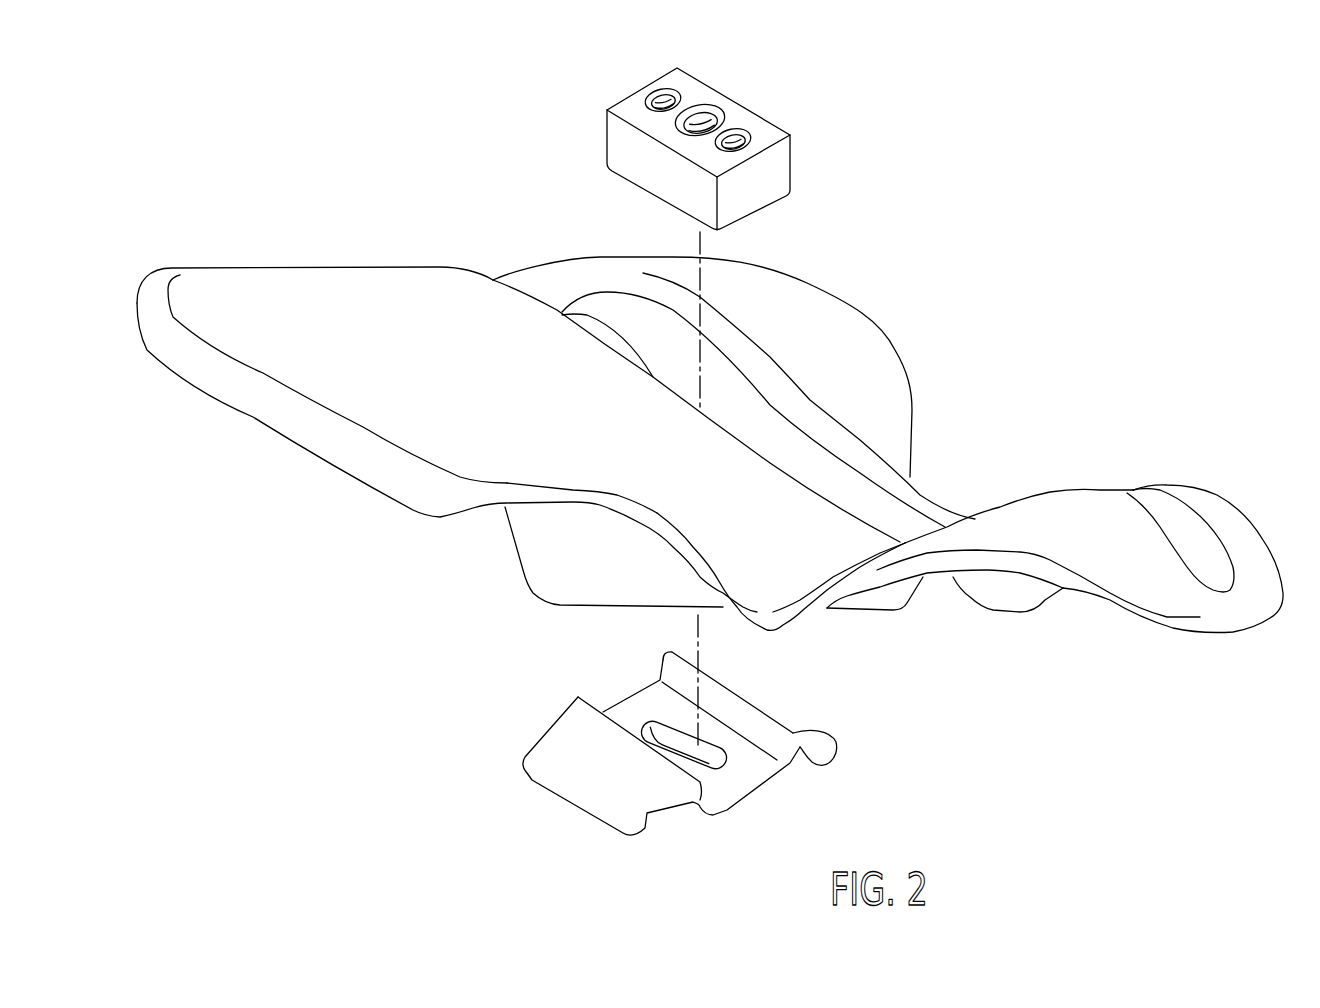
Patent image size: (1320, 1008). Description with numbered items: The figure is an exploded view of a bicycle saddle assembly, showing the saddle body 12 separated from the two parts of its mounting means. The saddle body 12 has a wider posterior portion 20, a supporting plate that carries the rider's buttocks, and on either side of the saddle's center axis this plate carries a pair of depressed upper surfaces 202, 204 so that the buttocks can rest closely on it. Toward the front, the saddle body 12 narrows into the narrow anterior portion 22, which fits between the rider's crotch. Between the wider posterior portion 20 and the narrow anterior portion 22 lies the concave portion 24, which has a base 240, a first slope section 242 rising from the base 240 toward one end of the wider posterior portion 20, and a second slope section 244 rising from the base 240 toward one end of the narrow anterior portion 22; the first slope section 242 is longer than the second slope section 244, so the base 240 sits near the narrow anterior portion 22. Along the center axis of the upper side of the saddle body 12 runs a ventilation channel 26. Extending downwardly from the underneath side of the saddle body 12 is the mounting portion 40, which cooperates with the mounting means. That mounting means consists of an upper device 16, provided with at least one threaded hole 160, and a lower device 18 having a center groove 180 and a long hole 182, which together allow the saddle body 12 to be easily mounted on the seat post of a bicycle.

The saddle body 12 is at (709, 459).
The upper device 16 is at (729, 125).
The threaded hole 160 is at (708, 120).
The lower device 18 is at (680, 778).
The center groove 180 is at (738, 743).
The long hole 182 is at (673, 743).
The wider posterior portion 20 is at (709, 459).
The depressed upper surface 202 is at (278, 312).
The depressed upper surface 204 is at (782, 300).
The narrow anterior portion 22 is at (1078, 517).
The concave portion 24 is at (707, 502).
The base 240 is at (757, 585).
The first slope section 242 is at (622, 503).
The second slope section 244 is at (855, 567).
The ventilation channel 26 is at (768, 447).
The mounting portion 40 is at (562, 555).